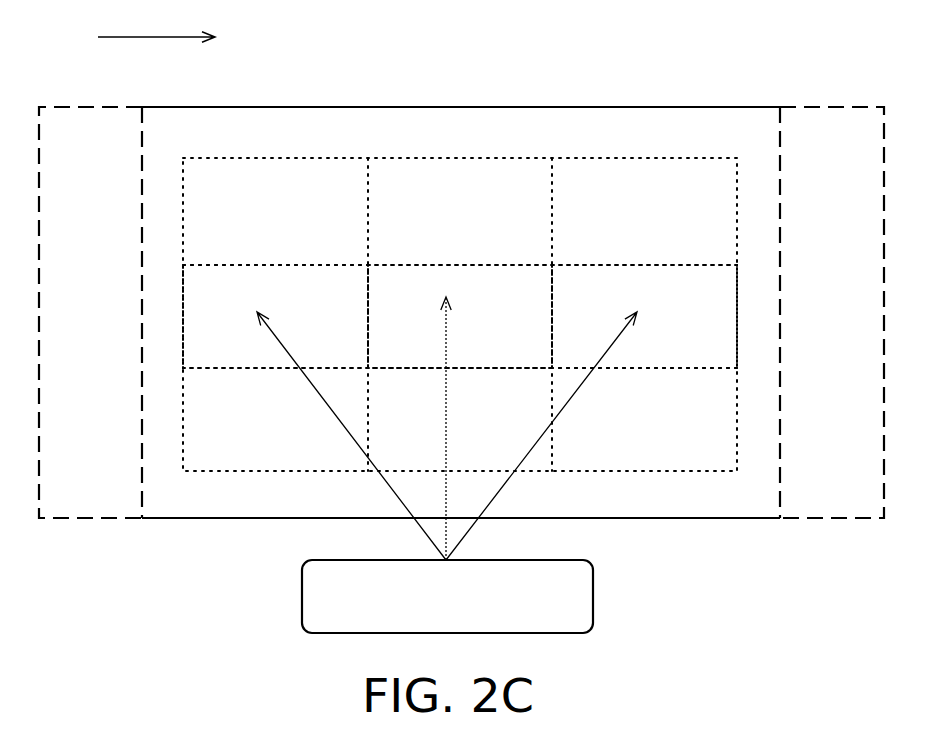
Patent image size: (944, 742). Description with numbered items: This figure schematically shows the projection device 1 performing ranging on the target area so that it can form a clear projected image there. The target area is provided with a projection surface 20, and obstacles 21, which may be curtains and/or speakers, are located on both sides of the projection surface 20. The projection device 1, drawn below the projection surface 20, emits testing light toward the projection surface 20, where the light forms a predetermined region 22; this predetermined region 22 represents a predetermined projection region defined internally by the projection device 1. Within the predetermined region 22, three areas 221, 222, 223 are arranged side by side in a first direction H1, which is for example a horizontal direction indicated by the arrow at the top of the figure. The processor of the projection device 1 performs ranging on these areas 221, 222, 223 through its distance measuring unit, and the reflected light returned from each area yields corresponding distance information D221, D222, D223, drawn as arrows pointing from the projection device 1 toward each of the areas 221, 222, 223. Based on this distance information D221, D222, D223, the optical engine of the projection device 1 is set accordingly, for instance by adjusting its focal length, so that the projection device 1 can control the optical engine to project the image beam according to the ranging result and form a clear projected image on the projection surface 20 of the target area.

The projection device 1 is at (594, 597).
The projection surface 20 is at (307, 107).
The obstacles 21 is at (90, 520).
The predetermined region 22 is at (632, 158).
The area 221 is at (246, 265).
The area 222 is at (447, 265).
The area 223 is at (630, 265).
The distance information D221 is at (351, 425).
The distance information D222 is at (481, 425).
The distance information D223 is at (573, 425).
The first direction H1 is at (172, 38).